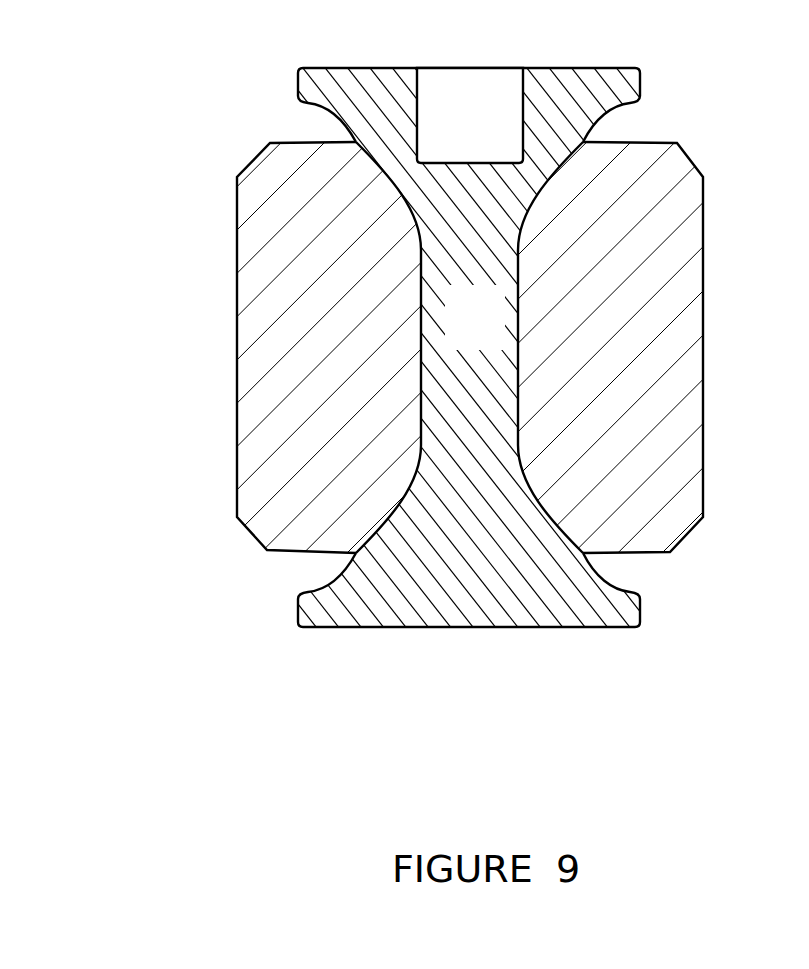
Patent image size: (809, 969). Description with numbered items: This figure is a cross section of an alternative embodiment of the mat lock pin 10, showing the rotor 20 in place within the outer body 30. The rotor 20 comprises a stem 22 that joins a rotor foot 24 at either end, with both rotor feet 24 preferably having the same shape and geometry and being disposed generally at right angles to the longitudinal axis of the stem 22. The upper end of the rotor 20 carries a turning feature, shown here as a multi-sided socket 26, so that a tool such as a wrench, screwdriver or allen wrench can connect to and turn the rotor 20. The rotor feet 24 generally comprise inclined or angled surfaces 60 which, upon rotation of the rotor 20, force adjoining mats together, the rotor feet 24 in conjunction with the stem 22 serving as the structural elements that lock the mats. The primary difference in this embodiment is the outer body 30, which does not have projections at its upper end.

The mat lock pin 10 is at (177, 434).
The rotor 20 is at (404, 329).
The stem 22 is at (469, 347).
The rotor foot 24 is at (639, 80).
The multi-sided socket 26 is at (455, 100).
The outer body 30 is at (678, 296).
The inclined/angled surfaces 60 is at (326, 104).